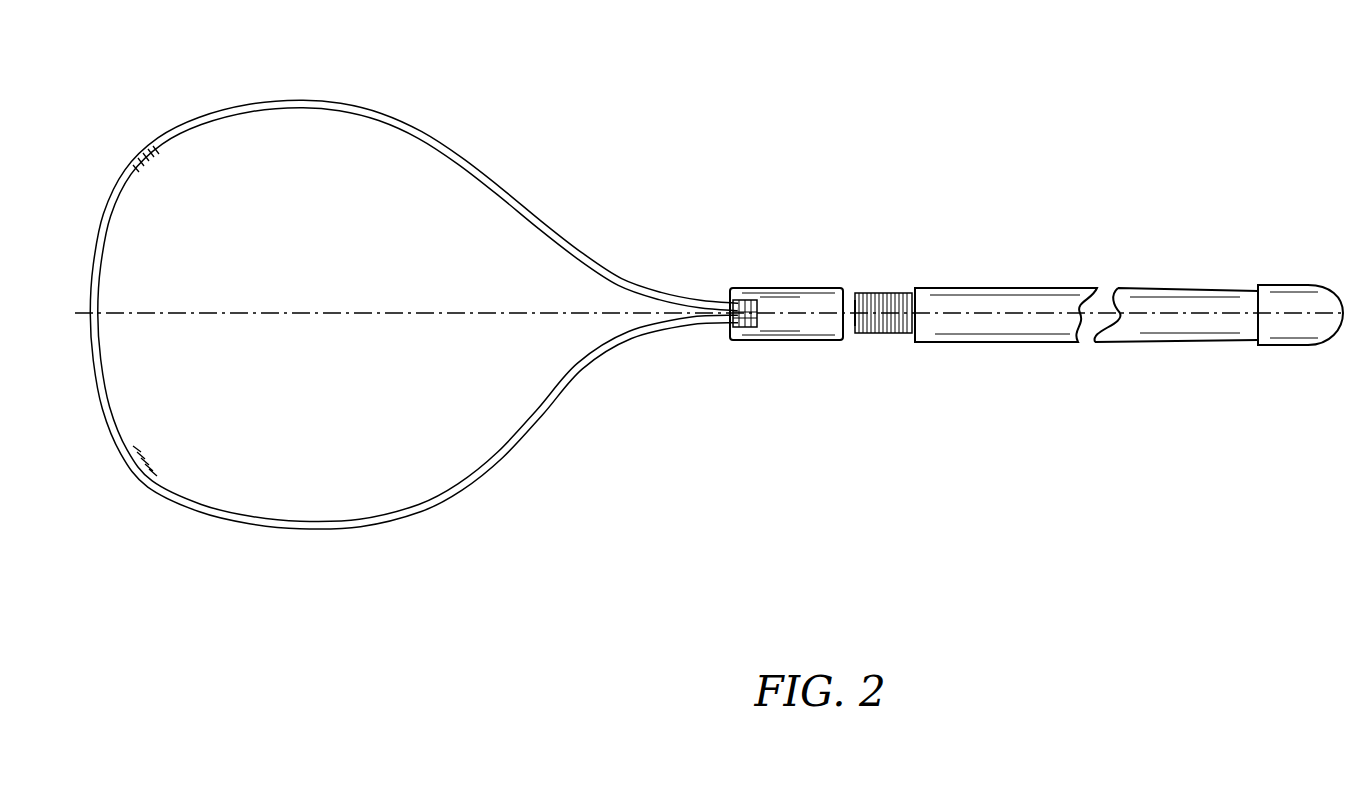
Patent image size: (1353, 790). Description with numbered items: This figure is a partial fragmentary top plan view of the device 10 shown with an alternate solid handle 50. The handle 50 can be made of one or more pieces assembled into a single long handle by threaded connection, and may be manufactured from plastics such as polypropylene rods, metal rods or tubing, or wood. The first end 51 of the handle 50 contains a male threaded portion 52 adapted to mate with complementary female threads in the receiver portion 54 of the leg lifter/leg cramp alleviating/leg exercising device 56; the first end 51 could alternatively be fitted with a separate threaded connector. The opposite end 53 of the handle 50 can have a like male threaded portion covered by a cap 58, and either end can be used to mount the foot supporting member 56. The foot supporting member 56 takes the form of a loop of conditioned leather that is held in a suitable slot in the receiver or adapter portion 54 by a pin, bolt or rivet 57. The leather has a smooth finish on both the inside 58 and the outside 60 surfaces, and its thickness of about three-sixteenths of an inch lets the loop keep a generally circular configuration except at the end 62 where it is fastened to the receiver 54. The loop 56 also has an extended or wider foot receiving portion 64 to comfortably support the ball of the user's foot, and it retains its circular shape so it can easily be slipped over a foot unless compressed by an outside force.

The device 10 is at (987, 251).
The solid handle 50 is at (1040, 285).
The first end of handle 51 is at (856, 332).
The male threaded portion 52 is at (884, 334).
The opposite end of handle 53 is at (1259, 345).
The receiver portion 54 is at (827, 288).
The foot supporting member 56 is at (522, 200).
The pin, bolt or rivet 57 is at (744, 340).
The cap 58 is at (388, 124).
The outside surface 60 is at (339, 101).
The end of loop 62 is at (727, 298).
The foot receiving portion 64 is at (92, 250).